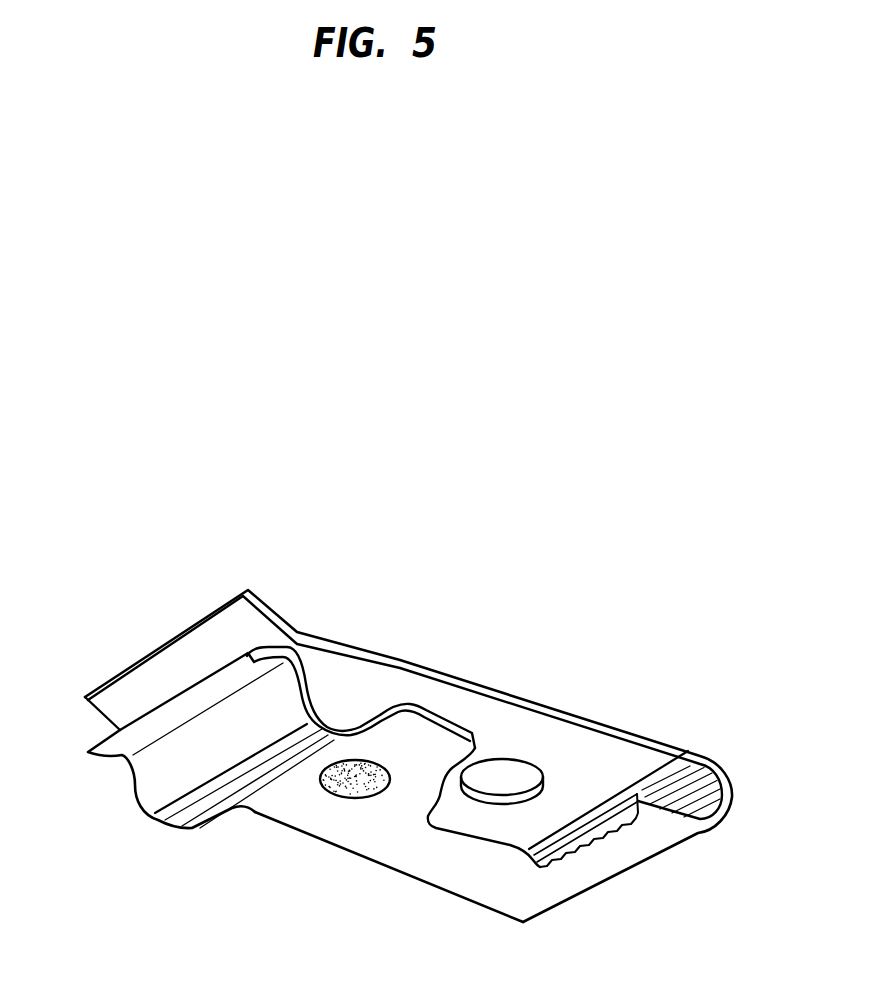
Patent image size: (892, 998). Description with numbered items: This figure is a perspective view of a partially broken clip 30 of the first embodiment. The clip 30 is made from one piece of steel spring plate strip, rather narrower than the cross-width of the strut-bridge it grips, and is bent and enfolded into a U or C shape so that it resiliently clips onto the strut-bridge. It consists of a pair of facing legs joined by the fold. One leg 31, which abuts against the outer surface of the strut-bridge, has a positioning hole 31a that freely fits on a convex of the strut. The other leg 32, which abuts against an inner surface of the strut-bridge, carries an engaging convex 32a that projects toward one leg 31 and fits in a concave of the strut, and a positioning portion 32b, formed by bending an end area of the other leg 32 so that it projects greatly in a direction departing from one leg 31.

The clip 30 is at (653, 731).
The one leg 31 is at (412, 664).
The positioning hole 31a is at (518, 762).
The other leg 32 is at (424, 881).
The engaging convex 32a is at (352, 783).
The positioning portion 32b is at (162, 827).